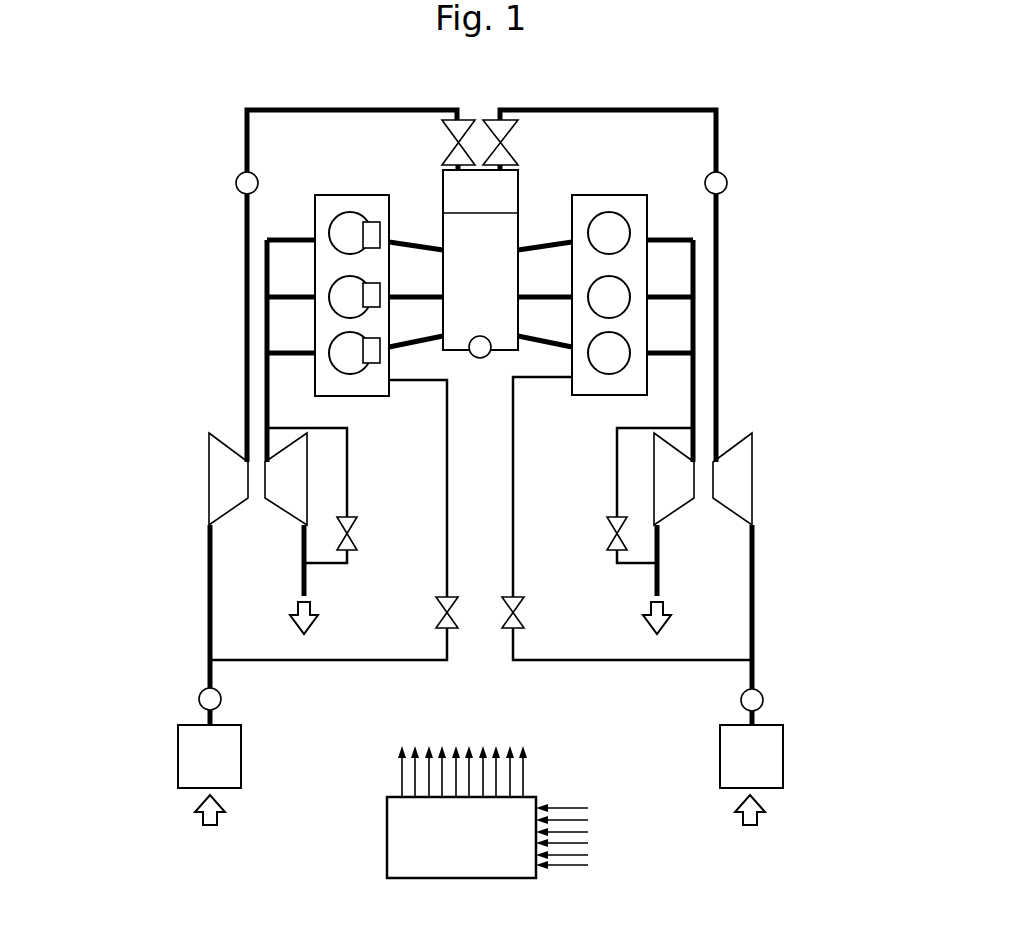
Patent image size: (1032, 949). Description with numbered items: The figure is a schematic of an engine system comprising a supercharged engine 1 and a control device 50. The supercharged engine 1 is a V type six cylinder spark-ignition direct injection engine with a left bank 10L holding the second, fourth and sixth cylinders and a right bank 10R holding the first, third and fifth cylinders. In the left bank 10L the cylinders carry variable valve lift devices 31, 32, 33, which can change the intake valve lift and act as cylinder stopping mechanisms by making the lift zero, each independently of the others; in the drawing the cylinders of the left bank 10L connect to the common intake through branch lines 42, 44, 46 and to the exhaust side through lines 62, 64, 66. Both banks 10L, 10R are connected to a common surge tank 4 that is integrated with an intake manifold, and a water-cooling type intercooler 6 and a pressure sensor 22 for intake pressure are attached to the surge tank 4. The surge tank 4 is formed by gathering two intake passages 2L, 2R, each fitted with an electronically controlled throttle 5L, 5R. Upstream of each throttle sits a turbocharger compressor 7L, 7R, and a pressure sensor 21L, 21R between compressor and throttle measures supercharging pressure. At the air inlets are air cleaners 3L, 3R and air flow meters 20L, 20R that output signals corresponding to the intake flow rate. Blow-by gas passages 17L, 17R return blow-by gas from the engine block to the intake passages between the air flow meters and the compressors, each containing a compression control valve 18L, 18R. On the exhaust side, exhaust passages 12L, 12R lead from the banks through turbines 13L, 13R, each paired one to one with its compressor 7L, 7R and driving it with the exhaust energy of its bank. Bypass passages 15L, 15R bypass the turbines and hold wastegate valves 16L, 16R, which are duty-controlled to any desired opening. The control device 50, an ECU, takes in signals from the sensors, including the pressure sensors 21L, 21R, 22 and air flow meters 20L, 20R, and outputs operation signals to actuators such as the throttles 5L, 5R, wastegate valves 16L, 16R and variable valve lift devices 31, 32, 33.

The supercharged engine 1 is at (393, 100).
The intake passage 2L is at (332, 108).
The intake passage 2R is at (606, 108).
The air cleaner 3L is at (178, 752).
The air cleaner 3R is at (783, 752).
The surge tank 4 is at (520, 232).
The throttle 5L is at (442, 144).
The throttle 5R is at (518, 144).
The intercooler 6 is at (443, 190).
The compressor 7L is at (209, 478).
The compressor 7R is at (752, 478).
The left bank 10L is at (327, 194).
The right bank 10R is at (620, 194).
The exhaust passage 12L is at (272, 385).
The exhaust passage 12R is at (692, 383).
The turbine 13L is at (282, 511).
The turbine 13R is at (676, 511).
The bypass passage 15L is at (348, 473).
The bypass passage 15R is at (617, 455).
The wastegate valve 16L is at (356, 541).
The wastegate valve 16R is at (608, 541).
The blow-by gas passage 17L is at (357, 662).
The blow-by gas passage 17R is at (620, 662).
The compression control valve 18L is at (436, 612).
The compression control valve 18R is at (524, 612).
The air flow meter 20L is at (199, 699).
The air flow meter 20R is at (763, 700).
The pressure sensor 21L is at (236, 183).
The pressure sensor 21R is at (727, 183).
The pressure sensor 22 is at (480, 360).
The variable valve lift device 31 is at (377, 363).
The variable valve lift device 32 is at (382, 290).
The variable valve lift device 33 is at (370, 222).
The intake port of cylinder #2 42 is at (411, 342).
The intake port of cylinder #4 44 is at (404, 302).
The intake port of cylinder #6 46 is at (406, 253).
The control device 50 is at (387, 830).
The exhaust port of cylinder #2 62 is at (294, 355).
The exhaust port of cylinder #4 64 is at (294, 299).
The exhaust port of cylinder #6 66 is at (294, 242).